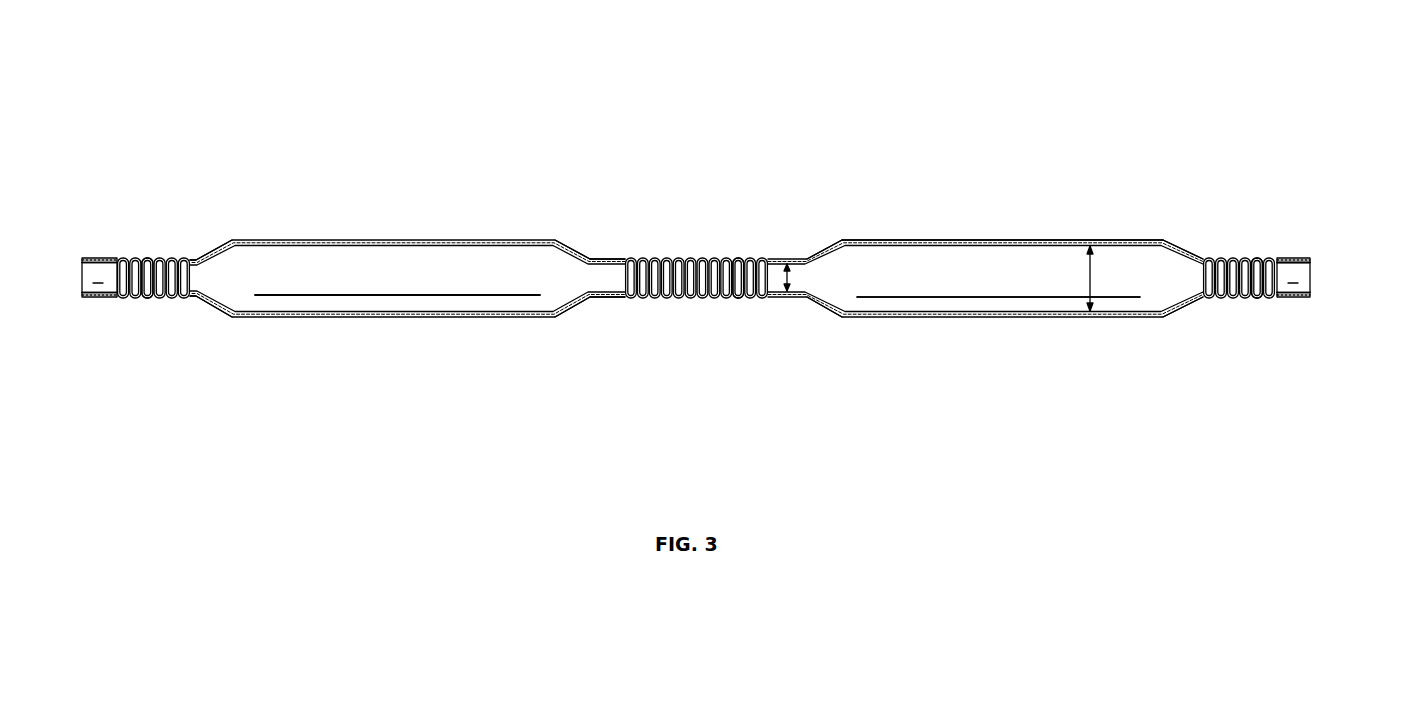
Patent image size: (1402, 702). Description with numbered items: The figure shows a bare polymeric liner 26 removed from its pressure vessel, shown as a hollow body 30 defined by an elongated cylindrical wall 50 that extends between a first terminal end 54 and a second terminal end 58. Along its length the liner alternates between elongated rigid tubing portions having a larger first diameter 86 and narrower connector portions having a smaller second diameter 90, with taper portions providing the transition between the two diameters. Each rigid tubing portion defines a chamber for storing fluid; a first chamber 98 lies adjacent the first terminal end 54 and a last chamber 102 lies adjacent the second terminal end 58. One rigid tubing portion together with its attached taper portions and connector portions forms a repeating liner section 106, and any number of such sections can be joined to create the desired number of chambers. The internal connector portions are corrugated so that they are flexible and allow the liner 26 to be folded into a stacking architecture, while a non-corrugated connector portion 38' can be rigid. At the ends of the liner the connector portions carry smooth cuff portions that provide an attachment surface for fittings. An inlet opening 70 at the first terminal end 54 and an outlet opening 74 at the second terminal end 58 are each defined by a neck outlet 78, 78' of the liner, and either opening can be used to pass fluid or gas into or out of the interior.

The liner 26 is at (258, 113).
The hollow body 30 is at (397, 278).
The non-corrugated connector portions 38' is at (610, 250).
The elongated cylindrical wall 50 is at (1000, 317).
The first terminal end 54 is at (82, 290).
The second terminal end 58 is at (1312, 289).
The inlet opening 70 is at (82, 274).
The outlet opening 74 is at (1312, 270).
The neck outlet 78 is at (74, 228).
The neck outlet 78' is at (1335, 227).
The first diameter 86 is at (1090, 280).
The second diameter 90 is at (787, 278).
The first chamber 98 is at (397, 278).
The last chamber 102 is at (998, 279).
The repeating liner section 106 is at (700, 383).